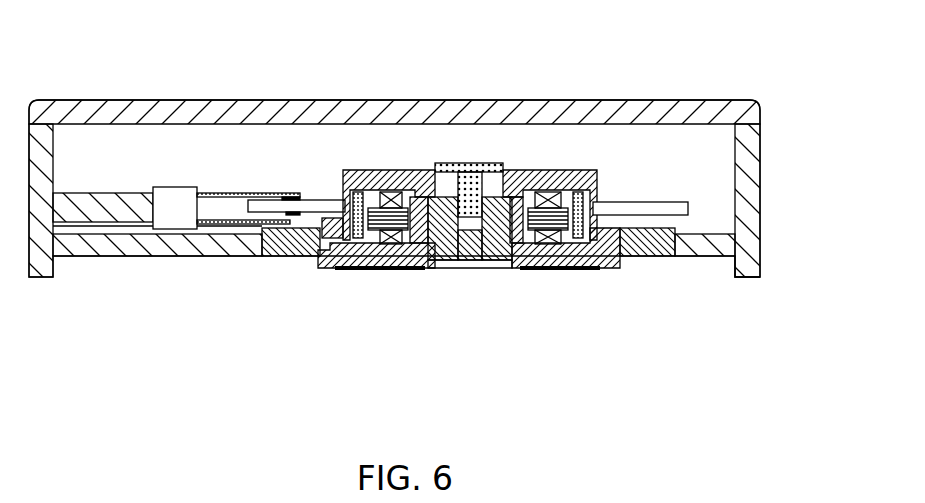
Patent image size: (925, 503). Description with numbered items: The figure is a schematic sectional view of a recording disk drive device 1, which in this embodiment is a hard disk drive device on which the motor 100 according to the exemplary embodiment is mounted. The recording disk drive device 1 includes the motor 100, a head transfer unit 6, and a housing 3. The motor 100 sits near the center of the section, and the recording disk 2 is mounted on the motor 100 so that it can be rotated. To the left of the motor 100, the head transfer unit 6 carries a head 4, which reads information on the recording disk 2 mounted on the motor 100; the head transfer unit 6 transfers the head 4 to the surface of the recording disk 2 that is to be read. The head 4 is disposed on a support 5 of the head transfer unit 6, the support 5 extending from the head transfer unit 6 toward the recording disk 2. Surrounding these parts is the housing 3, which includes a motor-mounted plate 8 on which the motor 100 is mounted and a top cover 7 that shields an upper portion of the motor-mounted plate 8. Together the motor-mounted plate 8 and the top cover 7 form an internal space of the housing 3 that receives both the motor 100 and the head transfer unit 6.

The recording disk drive device 1 is at (84, 52).
The recording disk 2 is at (650, 244).
The housing 3 is at (768, 160).
The head 4 is at (288, 229).
The support 5 is at (222, 225).
The head transfer unit 6 is at (170, 221).
The top cover 7 is at (345, 112).
The motor-mounted plate 8 is at (745, 270).
The motor 100 is at (470, 281).